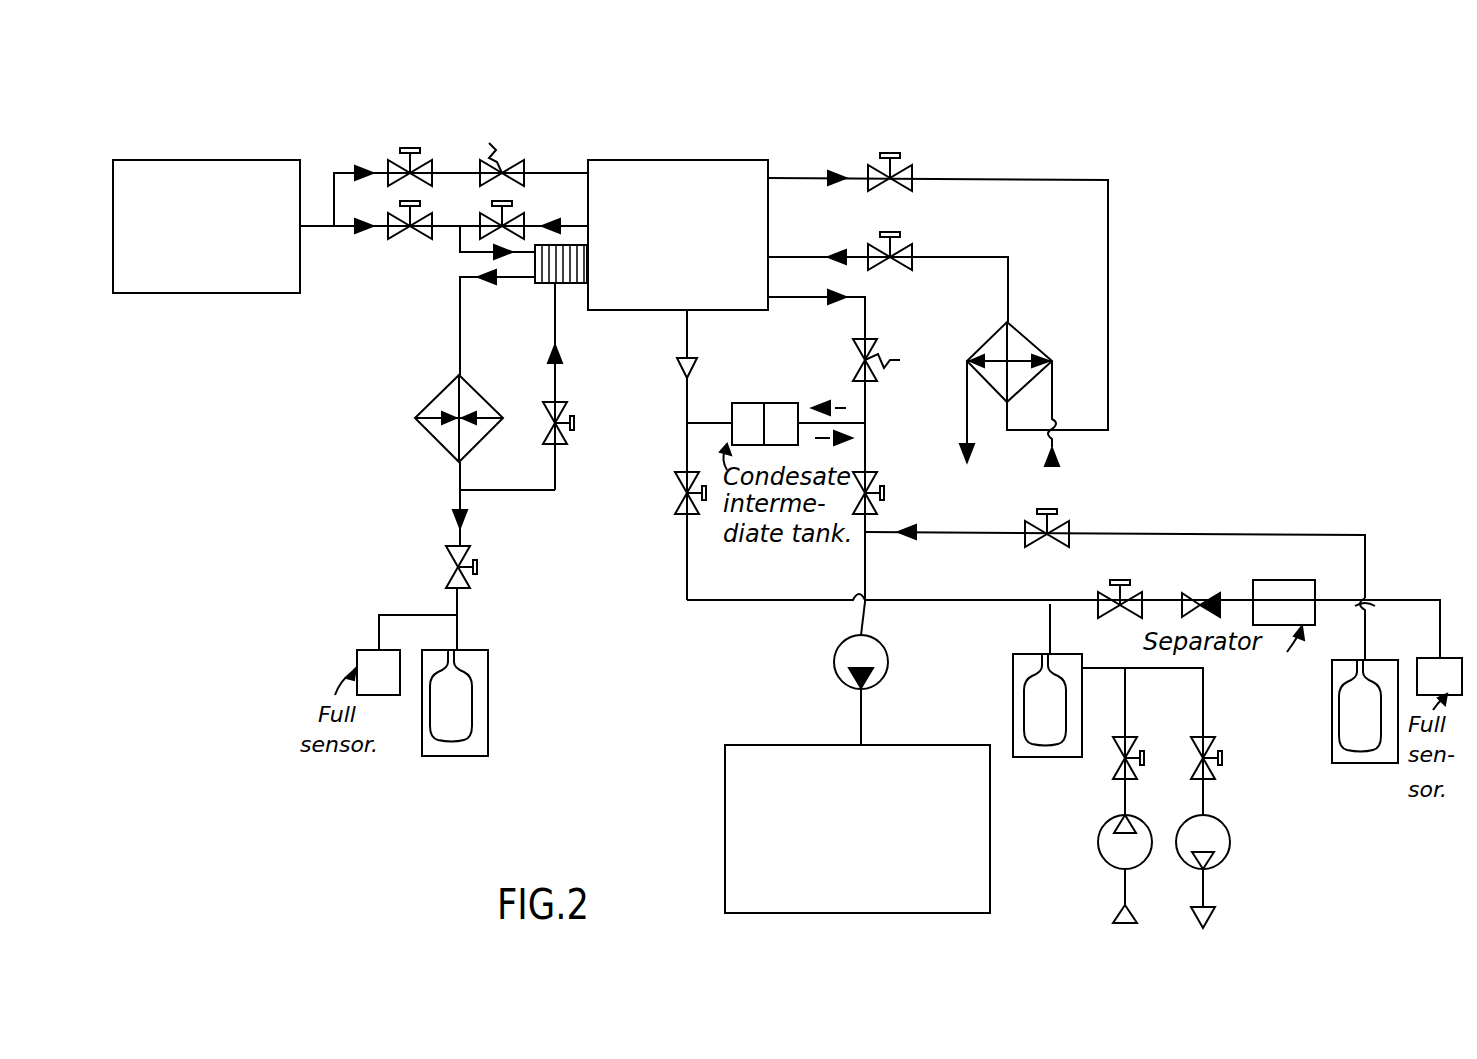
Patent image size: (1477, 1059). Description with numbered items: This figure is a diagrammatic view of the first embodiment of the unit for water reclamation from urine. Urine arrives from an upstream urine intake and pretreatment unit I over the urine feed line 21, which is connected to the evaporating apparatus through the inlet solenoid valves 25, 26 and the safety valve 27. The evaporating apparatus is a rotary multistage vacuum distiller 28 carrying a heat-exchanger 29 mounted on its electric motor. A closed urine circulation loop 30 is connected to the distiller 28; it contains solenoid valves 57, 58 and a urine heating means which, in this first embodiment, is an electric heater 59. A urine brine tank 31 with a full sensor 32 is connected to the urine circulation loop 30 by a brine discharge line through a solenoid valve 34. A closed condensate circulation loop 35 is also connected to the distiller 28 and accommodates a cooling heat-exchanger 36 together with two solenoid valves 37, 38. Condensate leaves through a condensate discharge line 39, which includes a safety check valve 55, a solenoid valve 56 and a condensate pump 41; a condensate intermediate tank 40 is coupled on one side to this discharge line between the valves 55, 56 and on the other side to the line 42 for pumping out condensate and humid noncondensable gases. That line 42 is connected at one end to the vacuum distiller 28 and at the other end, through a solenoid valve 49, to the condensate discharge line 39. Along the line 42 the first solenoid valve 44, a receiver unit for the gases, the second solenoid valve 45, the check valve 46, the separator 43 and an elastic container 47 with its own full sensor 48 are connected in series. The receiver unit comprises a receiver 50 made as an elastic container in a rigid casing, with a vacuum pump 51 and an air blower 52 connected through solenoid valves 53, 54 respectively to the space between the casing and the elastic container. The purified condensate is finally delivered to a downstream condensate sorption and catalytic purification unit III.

The urine intake and pretreatment unit I is at (255, 162).
The urine feed line 21 is at (319, 230).
The inlet solenoid valve 25 is at (389, 162).
The inlet solenoid valve 26 is at (410, 236).
The safety valve 27 is at (507, 167).
The solenoid valve 57 is at (515, 223).
The rotary multistage vacuum distiller 28 is at (744, 163).
The heat-exchanger 29 is at (547, 285).
The urine circulation loop 30 is at (557, 468).
The urine brine tank 31 is at (488, 702).
The full sensor 32 is at (378, 672).
The solenoid valve 34 is at (443, 556).
The condensate circulation loop 35 is at (1116, 335).
The cooling heat-exchanger 36 is at (1031, 344).
The solenoid valve 37 is at (903, 249).
The solenoid valve 38 is at (887, 165).
The condensate discharge line 39 is at (866, 617).
The condensate intermediate tank 40 is at (754, 404).
The condensate pump 41 is at (835, 673).
The line for pumping out condensate and noncondensable gases 42 is at (760, 606).
The separator 43 is at (1284, 602).
The first solenoid valve 44 is at (677, 485).
The second solenoid valve 45 is at (1098, 594).
The check valve 46 is at (1187, 599).
The elastic container 47 is at (1388, 763).
The full sensor 48 is at (1439, 676).
The solenoid valve 49 is at (1064, 530).
The receiver 50 is at (1068, 758).
The vacuum pump 51 is at (1228, 852).
The air blower 52 is at (1100, 853).
The solenoid valve 53 is at (1206, 743).
The solenoid valve 54 is at (1128, 743).
The safety check valve 55 is at (873, 346).
The solenoid valve 56 is at (872, 480).
The solenoid valve 58 is at (560, 409).
The electric heater 59 is at (440, 393).
The condensate sorption/catalytic purification unit III is at (917, 748).